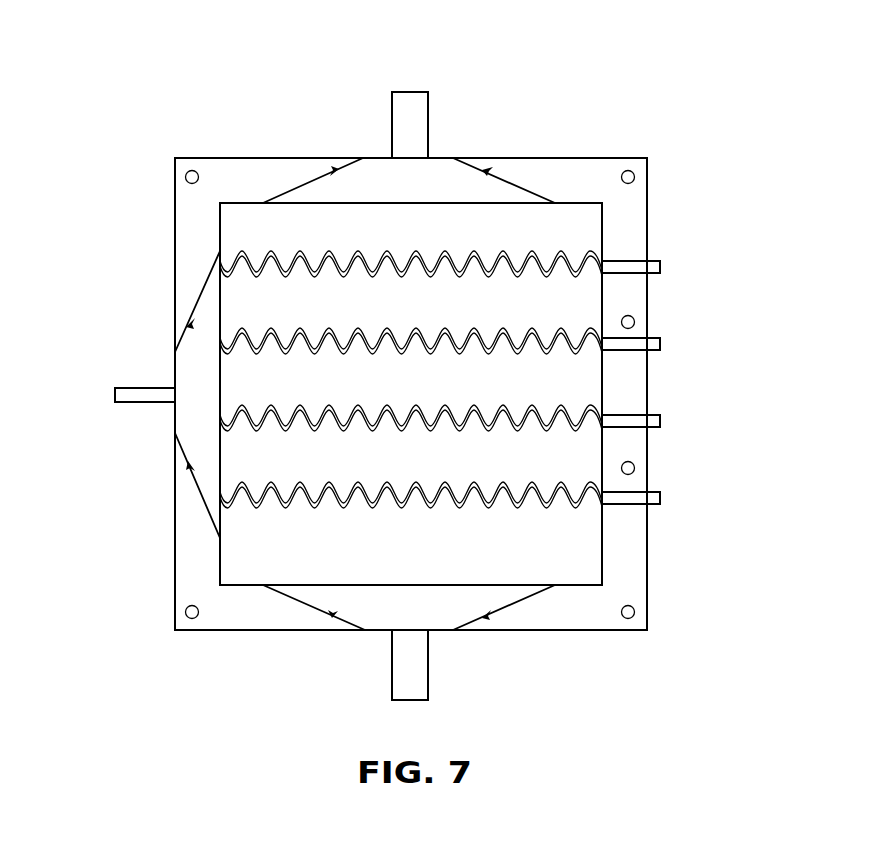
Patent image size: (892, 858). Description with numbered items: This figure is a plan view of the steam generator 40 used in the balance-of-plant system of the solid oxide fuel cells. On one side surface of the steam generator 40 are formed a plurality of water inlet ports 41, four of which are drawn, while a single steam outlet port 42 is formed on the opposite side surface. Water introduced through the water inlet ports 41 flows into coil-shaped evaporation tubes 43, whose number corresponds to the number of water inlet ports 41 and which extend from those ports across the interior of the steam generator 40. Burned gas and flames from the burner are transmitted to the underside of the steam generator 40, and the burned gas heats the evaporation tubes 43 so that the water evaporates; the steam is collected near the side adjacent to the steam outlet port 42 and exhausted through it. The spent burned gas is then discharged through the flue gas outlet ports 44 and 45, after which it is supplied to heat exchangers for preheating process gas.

The steam generator 40 is at (668, 52).
The water inlet ports 41 is at (660, 267).
The steam outlet port 42 is at (132, 393).
The coil-shaped evaporation tubes 43 is at (308, 503).
The flue gas outlet port 44 is at (397, 120).
The flue gas outlet port 45 is at (418, 673).